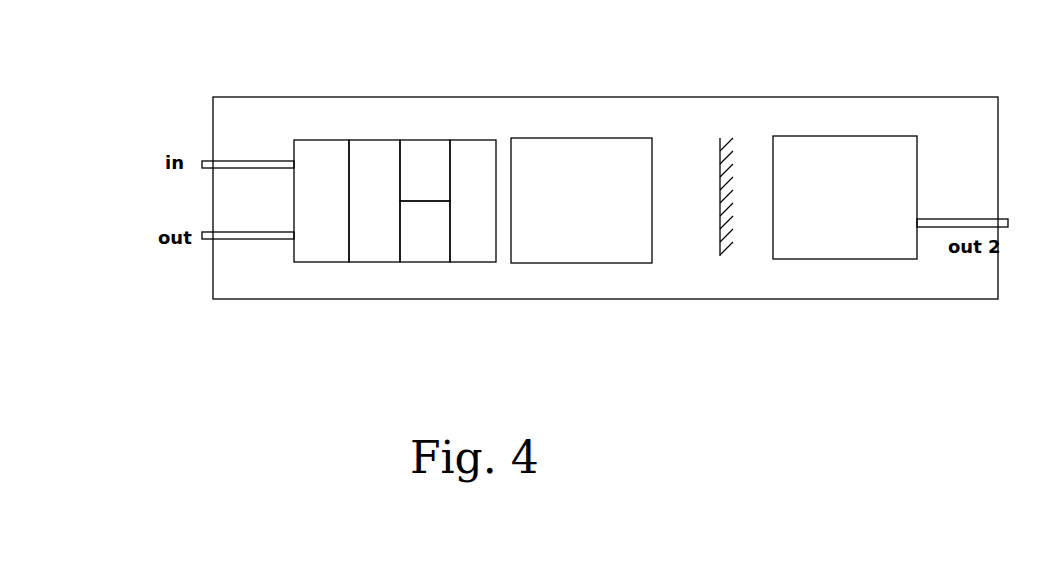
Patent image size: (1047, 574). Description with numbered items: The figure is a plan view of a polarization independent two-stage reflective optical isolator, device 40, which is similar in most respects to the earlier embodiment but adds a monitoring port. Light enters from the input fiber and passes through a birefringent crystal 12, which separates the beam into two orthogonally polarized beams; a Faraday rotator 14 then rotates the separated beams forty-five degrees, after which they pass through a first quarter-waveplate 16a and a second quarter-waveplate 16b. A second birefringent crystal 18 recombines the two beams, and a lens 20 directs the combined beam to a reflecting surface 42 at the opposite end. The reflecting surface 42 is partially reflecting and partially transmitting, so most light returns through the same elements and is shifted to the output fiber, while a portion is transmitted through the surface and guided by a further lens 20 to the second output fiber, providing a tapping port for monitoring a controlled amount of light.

The birefringent crystal 12 is at (307, 140).
The Faraday rotator 14 is at (367, 140).
The first quarter-waveplate 16a is at (438, 262).
The second quarter-waveplate 16b is at (423, 140).
The second birefringent crystal 18 is at (480, 262).
The lens 20 is at (570, 264).
The device 40 is at (473, 97).
The reflecting surface 42 is at (722, 256).